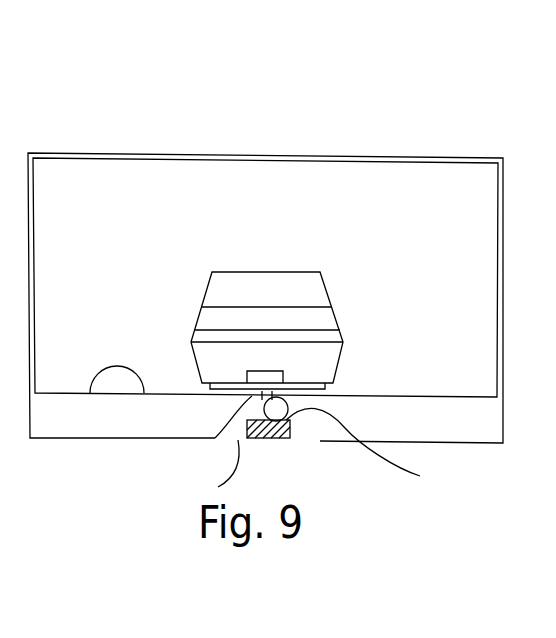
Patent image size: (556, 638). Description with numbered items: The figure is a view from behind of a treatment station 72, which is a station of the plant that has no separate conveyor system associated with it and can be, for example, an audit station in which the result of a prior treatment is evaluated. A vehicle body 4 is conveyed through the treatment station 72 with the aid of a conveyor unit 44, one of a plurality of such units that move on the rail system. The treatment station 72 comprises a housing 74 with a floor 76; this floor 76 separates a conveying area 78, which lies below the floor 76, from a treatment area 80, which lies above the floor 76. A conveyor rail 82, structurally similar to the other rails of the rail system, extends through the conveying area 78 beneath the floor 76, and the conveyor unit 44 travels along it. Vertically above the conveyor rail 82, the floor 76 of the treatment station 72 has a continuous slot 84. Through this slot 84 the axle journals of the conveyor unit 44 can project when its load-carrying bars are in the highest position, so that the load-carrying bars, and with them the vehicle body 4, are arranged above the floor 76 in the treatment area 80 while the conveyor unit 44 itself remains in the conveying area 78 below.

The vehicle body 4 is at (272, 271).
The conveyor unit 44 is at (236, 425).
The treatment station 72 is at (472, 158).
The housing 74 is at (366, 160).
The floor 76 is at (88, 393).
The conveying area 78 is at (205, 440).
The treatment area 80 is at (427, 267).
The conveyor rail 82 is at (270, 442).
The continuous slot 84 is at (370, 455).